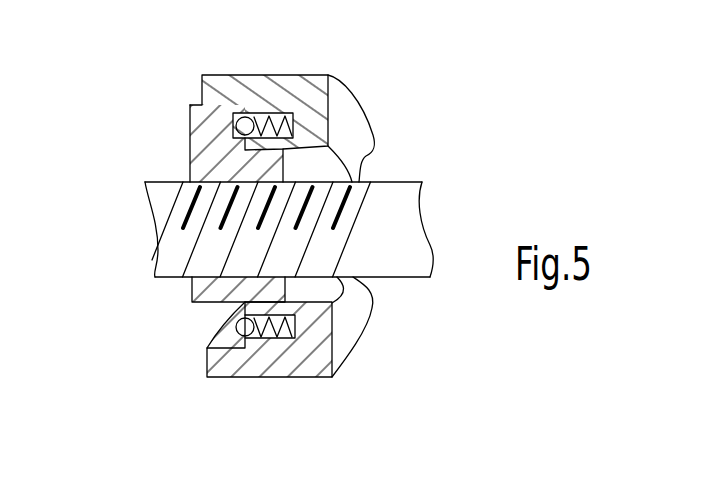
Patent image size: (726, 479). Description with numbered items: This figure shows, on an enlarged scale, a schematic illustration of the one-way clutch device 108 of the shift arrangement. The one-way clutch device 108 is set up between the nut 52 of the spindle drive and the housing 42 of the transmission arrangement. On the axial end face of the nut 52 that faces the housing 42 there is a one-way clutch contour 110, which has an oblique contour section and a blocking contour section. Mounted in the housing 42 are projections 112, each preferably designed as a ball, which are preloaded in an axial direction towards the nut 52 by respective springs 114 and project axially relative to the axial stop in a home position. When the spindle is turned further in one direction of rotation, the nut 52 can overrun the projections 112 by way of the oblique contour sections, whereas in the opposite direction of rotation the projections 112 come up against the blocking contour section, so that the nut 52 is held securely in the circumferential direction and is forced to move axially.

The housing 42 is at (298, 92).
The nut 52 is at (193, 302).
The one-way clutch device 108 is at (183, 70).
The one-way clutch contour 110 is at (236, 132).
The projection 112 is at (248, 118).
The spring 114 is at (294, 131).